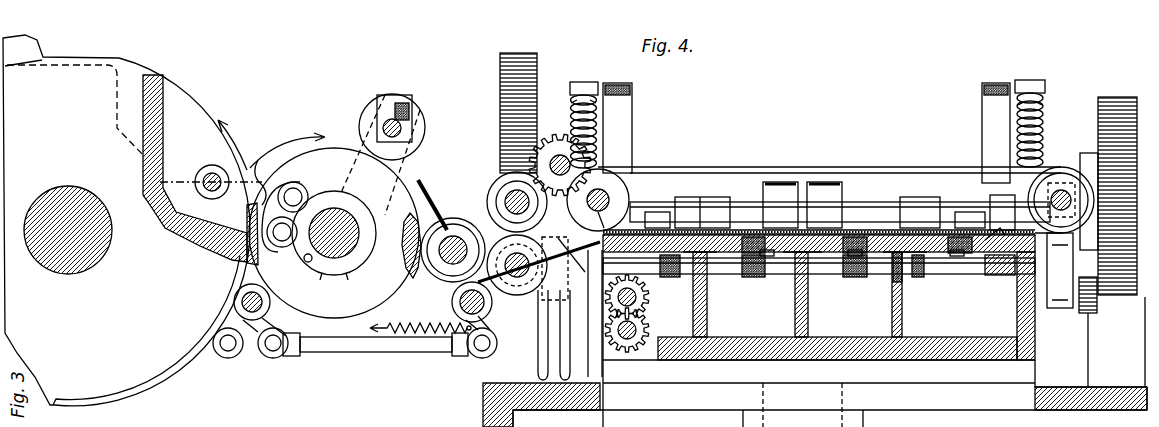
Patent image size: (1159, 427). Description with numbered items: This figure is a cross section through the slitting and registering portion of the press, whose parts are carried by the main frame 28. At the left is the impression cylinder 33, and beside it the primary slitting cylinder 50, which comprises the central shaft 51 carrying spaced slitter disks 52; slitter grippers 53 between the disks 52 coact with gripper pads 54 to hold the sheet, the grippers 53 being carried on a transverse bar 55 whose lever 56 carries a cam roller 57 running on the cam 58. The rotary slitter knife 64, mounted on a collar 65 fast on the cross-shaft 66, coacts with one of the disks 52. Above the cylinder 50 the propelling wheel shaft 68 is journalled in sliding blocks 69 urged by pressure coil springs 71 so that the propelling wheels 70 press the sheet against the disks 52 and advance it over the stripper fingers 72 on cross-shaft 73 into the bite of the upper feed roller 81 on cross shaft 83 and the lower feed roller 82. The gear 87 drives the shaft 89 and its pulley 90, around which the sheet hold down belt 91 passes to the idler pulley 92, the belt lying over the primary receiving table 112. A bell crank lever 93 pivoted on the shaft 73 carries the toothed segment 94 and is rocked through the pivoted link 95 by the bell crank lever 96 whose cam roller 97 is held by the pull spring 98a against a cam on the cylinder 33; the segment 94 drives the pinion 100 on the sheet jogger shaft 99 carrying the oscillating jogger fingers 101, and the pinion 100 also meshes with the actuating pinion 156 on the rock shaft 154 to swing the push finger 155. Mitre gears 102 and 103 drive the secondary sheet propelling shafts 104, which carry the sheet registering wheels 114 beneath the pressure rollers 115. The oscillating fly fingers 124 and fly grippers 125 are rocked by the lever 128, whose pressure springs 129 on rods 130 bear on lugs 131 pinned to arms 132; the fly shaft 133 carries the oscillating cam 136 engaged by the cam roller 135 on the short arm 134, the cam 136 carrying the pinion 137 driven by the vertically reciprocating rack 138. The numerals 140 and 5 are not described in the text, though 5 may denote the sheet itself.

The impression cylinder 33 is at (133, 72).
The main frame 28 is at (117, 128).
The slitter grippers 53 is at (258, 160).
The slitter disks 52 is at (222, 197).
The gripper pads 54 is at (258, 245).
The transverse bar 55 is at (296, 190).
The lever 56 is at (325, 190).
The cam roller 57 is at (283, 248).
The cam 58 is at (336, 276).
The central shaft 51 is at (352, 248).
The primary slitting cylinder 50 is at (338, 316).
The collar 65 is at (414, 230).
The cross-shaft 66 is at (456, 236).
The rotary slitter knife 64 is at (452, 290).
The stripper fingers 72 is at (428, 190).
The sheet propelling wheel shaft 68 is at (383, 122).
The sliding blocks 69 is at (383, 95).
The propelling wheels 70 is at (400, 95).
The pressure coil springs 71 is at (420, 110).
The upper feed roller 81 is at (497, 180).
The cross shaft 83 is at (508, 204).
The cross-shaft 73 is at (508, 295).
The lower feed roller 82 is at (508, 266).
The gear 87 is at (556, 134).
The rack 140 is at (500, 118).
The pulley 90 is at (606, 182).
The shaft 89 is at (610, 200).
The sheet hold down belt 91 is at (696, 150).
The idler pulley 92 is at (1061, 175).
The bell crank lever 93 is at (478, 356).
The pivoted link 95 is at (350, 352).
The bell crank lever 96 is at (262, 352).
The cam roller 97 is at (230, 358).
The pull spring 98a is at (392, 335).
The sheet jogger shaft 99 is at (650, 297).
The pinion 100 is at (650, 322).
The oscillating jogger fingers 101 is at (556, 238).
The mitre gears 102 is at (520, 296).
The mitre gears 103 is at (551, 335).
The secondary sheet propelling shafts 104 is at (728, 276).
The primary receiving table 112 is at (1000, 225).
The sheet registering wheels 114 is at (895, 285).
The pressure rollers 115 is at (705, 210).
The oscillating fly fingers 124 is at (754, 280).
The fly grippers 125 is at (665, 215).
The lever 128 is at (998, 195).
The pressure springs 129 is at (580, 92).
The rods 130 is at (572, 102).
The lugs 131 is at (570, 90).
The arms 132 is at (620, 112).
The oscillating fly shaft 133 is at (865, 200).
The short arm 134 is at (1058, 308).
The cam roller 135 is at (1090, 325).
The oscillating cam 136 is at (1088, 153).
The pinion 137 is at (1110, 290).
The vertically reciprocating rack 138 is at (1115, 97).
The key block 5 is at (762, 210).
The toothed segment 94 is at (590, 300).
The rock shaft 154 is at (626, 352).
The oscillating push finger 155 is at (605, 320).
The actuating pinion 156 is at (645, 348).